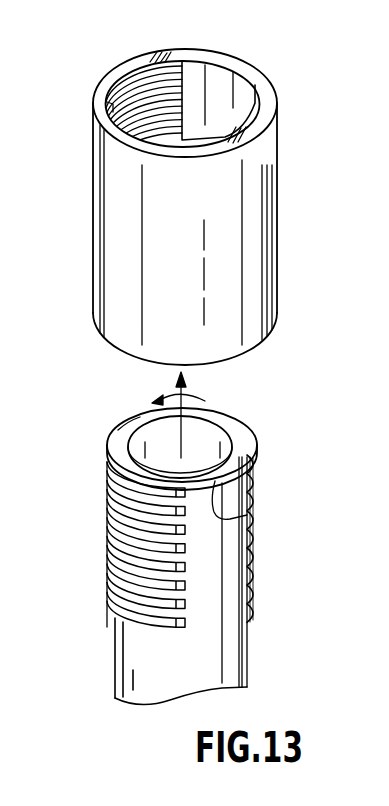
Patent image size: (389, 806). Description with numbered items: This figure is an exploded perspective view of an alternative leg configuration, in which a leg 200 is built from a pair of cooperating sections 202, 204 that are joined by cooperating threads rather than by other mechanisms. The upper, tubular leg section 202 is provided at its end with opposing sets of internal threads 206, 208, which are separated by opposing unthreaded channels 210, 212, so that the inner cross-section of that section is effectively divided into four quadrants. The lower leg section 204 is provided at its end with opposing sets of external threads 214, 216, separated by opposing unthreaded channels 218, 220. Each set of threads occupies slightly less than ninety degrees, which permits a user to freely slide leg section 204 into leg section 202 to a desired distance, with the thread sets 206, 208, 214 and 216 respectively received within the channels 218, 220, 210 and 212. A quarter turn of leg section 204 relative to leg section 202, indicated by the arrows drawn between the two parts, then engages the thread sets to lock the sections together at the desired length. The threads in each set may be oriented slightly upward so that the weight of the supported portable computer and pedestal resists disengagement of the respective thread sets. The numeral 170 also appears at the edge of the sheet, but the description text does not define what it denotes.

The implant 170 is at (343, 3).
The leg 200 is at (76, 96).
The leg section 202 is at (181, 307).
The leg section 204 is at (192, 680).
The internal threads 206 is at (139, 61).
The internal threads 208 is at (213, 143).
The unthreaded channel 210 is at (118, 135).
The unthreaded channel 212 is at (218, 80).
The external threads 214 is at (117, 480).
The external threads 216 is at (240, 430).
The unthreaded channel 218 is at (130, 430).
The unthreaded channel 220 is at (245, 518).